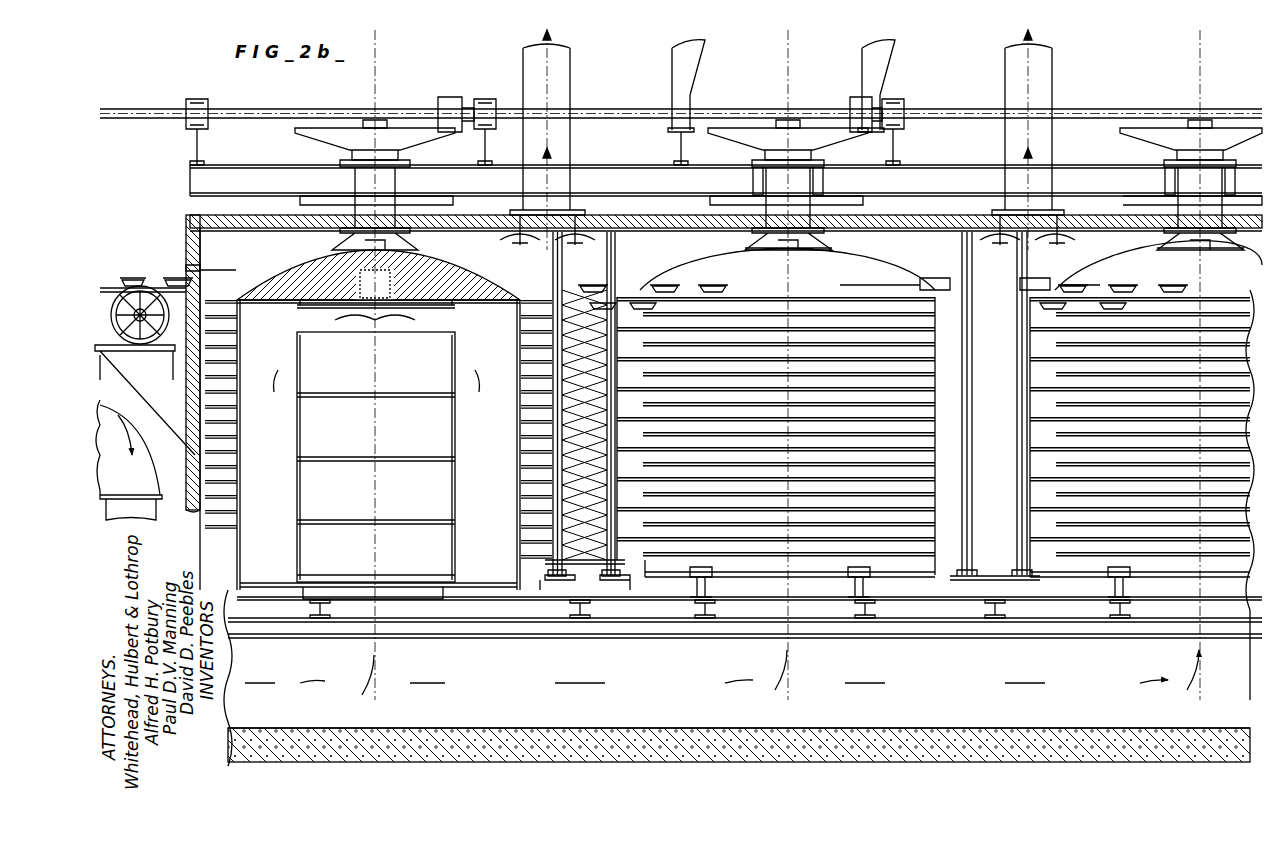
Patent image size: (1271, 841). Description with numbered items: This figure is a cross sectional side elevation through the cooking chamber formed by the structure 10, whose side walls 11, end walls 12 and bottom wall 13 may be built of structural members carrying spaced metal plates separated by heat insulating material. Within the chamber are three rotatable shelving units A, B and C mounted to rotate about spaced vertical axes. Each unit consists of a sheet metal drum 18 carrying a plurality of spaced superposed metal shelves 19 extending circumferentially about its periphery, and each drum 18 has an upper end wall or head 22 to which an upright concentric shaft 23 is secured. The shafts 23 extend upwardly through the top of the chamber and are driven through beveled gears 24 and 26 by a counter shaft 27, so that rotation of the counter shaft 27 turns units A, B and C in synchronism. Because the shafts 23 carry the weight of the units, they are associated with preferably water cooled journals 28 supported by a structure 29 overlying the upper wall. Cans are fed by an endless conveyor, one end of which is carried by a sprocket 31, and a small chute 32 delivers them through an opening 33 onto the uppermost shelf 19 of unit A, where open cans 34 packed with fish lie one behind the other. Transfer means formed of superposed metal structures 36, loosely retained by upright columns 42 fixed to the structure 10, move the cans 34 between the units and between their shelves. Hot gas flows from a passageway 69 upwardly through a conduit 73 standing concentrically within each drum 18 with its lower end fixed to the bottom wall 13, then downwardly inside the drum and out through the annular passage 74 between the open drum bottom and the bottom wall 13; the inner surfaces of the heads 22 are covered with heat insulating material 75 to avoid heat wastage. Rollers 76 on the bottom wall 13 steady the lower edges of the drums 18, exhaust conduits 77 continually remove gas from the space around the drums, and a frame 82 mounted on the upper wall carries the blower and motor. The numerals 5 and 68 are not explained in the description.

The tray guide 5 is at (970, 276).
The structure 10 is at (183, 238).
The side walls 11 is at (270, 225).
The end walls 12 is at (190, 445).
The bottom wall 13 is at (655, 600).
The drum 18 is at (297, 265).
The shelves 19 is at (208, 470).
The upper end wall 22 is at (440, 247).
The shaft 23 is at (378, 120).
The beveled gear 24 is at (322, 128).
The beveled gear 26 is at (448, 100).
The counter shaft 27 is at (603, 110).
The journals 28 is at (355, 185).
The structure 29 is at (236, 176).
The sprocket 31 is at (148, 345).
The chute 32 is at (175, 270).
The opening 33 is at (204, 272).
The cans 34 is at (138, 276).
The metal structures 36 is at (772, 440).
The columns 42 is at (607, 265).
The foundation 68 is at (645, 757).
The passageway 69 is at (752, 722).
The conduit 73 is at (455, 372).
The annular passage 74 is at (470, 580).
The heat insulating material 75 is at (320, 300).
The rollers 76 is at (712, 572).
The exhaust conduits 77 is at (570, 76).
The frame 82 is at (672, 62).
The unit A is at (508, 262).
The unit B is at (905, 262).
The unit C is at (1078, 264).